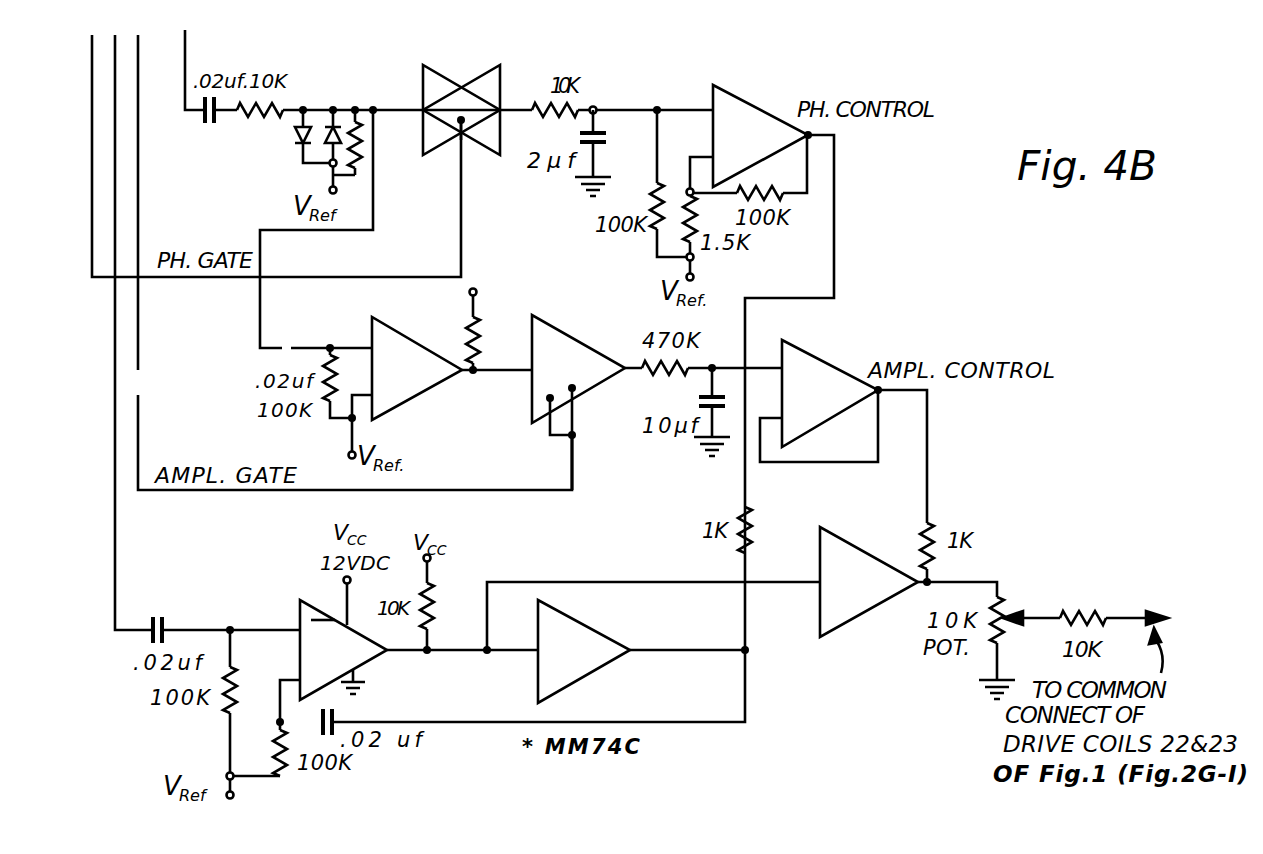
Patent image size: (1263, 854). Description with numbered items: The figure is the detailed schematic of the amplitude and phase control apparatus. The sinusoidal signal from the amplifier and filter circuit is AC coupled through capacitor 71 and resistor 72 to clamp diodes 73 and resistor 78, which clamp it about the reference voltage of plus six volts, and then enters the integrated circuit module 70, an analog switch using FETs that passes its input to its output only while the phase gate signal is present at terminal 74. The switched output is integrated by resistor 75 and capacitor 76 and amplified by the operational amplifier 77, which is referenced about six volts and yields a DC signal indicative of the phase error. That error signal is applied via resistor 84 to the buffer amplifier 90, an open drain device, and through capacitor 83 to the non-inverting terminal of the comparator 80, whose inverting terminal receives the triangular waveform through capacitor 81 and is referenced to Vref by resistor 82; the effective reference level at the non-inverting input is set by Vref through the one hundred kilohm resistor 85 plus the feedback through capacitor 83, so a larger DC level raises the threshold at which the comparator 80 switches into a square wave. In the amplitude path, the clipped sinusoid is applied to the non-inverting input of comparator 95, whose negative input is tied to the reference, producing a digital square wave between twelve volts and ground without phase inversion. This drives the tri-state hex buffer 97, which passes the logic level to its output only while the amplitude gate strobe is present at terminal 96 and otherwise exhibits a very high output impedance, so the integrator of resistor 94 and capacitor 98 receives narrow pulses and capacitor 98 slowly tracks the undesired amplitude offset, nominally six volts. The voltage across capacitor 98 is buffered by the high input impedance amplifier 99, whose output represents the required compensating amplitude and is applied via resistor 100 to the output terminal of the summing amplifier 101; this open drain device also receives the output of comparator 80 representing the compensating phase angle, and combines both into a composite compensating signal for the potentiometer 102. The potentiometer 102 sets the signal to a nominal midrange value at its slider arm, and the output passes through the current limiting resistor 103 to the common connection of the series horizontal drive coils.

The integrated circuit module 70 is at (503, 72).
The capacitor 71 is at (204, 128).
The resistor 72 is at (262, 126).
The clamp diodes 73 is at (278, 172).
The terminal 74 is at (452, 155).
The resistor 75 is at (594, 105).
The capacitor 76 is at (632, 131).
The operational amplifier 77 is at (750, 101).
The resistor 78 is at (366, 148).
The comparator 80 is at (367, 675).
The capacitor 81 is at (170, 597).
The resistor 82 is at (213, 712).
The capacitor 83 is at (340, 713).
The resistor 84 is at (742, 538).
The resistor 85 is at (267, 747).
The buffer amplifier 90 is at (600, 672).
The resistor 94 is at (638, 360).
The comparator 95 is at (410, 348).
The terminal 96 is at (576, 425).
The tri-state hex buffer 97 is at (586, 318).
The capacitor 98 is at (692, 405).
The buffer amplifier 99 is at (826, 370).
The resistor 100 is at (937, 523).
The summing amplifier 101 is at (822, 625).
The potentiometer 102 is at (1008, 600).
The current limiting resistor 103 is at (1088, 597).